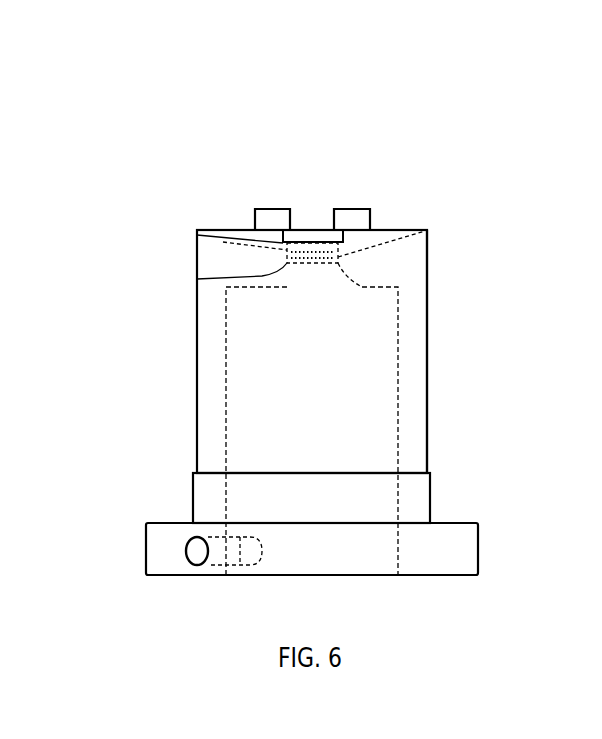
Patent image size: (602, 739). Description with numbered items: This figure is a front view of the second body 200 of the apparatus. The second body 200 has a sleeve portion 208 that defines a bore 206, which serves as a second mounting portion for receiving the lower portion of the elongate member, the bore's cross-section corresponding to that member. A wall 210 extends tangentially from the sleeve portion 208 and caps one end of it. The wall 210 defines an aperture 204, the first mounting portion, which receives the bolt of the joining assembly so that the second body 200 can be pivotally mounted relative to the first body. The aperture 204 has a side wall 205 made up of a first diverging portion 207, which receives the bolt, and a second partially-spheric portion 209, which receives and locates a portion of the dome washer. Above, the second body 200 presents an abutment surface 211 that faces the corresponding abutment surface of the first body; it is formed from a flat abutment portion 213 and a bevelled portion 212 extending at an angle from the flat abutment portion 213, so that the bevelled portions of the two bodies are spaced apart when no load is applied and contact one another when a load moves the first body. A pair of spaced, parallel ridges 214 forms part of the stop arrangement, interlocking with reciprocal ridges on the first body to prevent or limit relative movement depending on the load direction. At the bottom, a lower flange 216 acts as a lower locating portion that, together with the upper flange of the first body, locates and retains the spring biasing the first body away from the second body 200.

The second body 200 is at (487, 117).
The aperture 204 is at (310, 237).
The side wall 205 is at (287, 257).
The bore 206 is at (383, 395).
The first diverging portion 207 is at (197, 235).
The sleeve portion 208 is at (420, 458).
The second partially-spheric portion 209 is at (197, 280).
The wall 210 is at (413, 265).
The abutment surface 211 is at (382, 218).
The bevelled portion 212 is at (412, 230).
The flat abutment portion 213 is at (210, 228).
The ridges 214 is at (274, 211).
The lower flange 216 is at (168, 548).